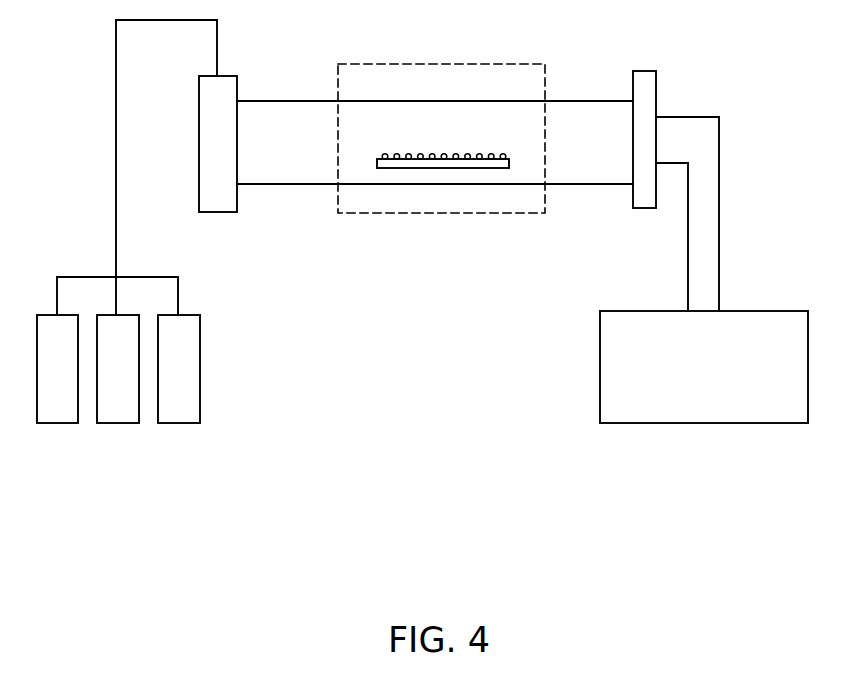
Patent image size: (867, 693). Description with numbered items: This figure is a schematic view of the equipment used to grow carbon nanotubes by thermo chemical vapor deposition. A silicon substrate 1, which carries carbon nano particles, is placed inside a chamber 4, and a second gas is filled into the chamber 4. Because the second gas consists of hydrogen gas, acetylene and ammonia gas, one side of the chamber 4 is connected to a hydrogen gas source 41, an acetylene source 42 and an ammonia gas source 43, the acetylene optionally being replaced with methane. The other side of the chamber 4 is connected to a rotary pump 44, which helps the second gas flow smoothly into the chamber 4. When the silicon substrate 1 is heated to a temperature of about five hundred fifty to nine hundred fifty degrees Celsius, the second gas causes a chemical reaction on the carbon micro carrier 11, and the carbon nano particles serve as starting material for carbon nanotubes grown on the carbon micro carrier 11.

The silicon substrate 1 is at (509, 163).
The carbon micro carrier 11 is at (504, 153).
The chamber 4 is at (593, 100).
The hydrogen gas source 41 is at (48, 313).
The acetylene source 42 is at (108, 313).
The ammonia gas source 43 is at (187, 313).
The rotary pump 44 is at (777, 311).